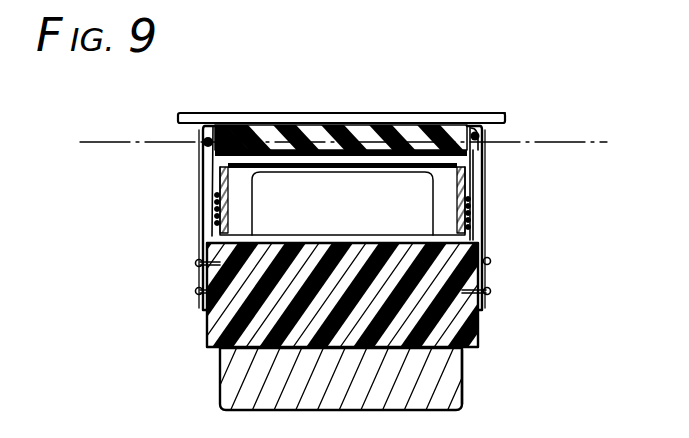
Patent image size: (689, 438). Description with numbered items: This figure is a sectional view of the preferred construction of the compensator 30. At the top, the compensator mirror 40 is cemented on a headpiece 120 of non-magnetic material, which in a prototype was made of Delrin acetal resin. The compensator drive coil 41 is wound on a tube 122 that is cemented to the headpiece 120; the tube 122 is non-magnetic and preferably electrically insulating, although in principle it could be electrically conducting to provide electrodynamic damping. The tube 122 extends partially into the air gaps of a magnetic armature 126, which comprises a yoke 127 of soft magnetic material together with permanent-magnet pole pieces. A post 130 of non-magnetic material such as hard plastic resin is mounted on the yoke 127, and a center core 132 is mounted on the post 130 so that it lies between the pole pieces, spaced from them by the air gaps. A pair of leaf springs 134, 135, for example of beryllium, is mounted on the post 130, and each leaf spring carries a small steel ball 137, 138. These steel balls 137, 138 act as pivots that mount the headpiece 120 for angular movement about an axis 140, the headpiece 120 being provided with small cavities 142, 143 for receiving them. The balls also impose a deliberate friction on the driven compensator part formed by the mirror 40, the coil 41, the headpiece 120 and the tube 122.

The compensator 30 is at (195, 278).
The compensator mirror 40 is at (490, 113).
The compensator drive coil 41 is at (475, 198).
The headpiece 120 is at (288, 124).
The tube 122 is at (212, 180).
The magnetic armature 126 is at (216, 387).
The yoke 127 is at (448, 381).
The post 130 is at (207, 338).
The center core 132 is at (360, 227).
The leaf spring 134 is at (201, 238).
The leaf spring 135 is at (478, 240).
The steel ball 137 is at (203, 145).
The steel ball 138 is at (474, 152).
The axis 140 is at (565, 142).
The cavity 142 is at (240, 127).
The cavity 143 is at (462, 126).